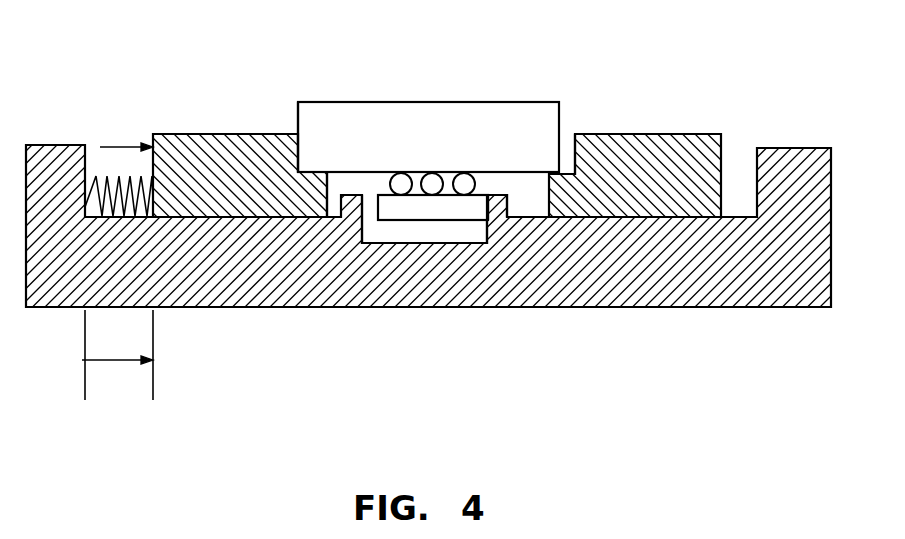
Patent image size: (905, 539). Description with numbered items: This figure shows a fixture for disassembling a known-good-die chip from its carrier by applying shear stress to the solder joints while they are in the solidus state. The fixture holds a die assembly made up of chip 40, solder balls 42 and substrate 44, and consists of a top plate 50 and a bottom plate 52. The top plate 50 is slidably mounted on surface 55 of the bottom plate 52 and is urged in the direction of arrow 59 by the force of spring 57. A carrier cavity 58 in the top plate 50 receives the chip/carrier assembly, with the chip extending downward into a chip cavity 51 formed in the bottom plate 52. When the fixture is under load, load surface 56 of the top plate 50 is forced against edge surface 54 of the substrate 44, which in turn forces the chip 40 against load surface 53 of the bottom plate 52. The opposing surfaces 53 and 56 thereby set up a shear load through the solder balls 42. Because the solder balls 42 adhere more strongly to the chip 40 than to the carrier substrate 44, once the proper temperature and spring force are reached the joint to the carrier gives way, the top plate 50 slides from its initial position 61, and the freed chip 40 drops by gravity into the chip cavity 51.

The chip 40 is at (395, 207).
The solder balls 42 is at (466, 181).
The substrate 44 is at (517, 108).
The top plate 50 is at (192, 141).
The chip cavity 51 is at (380, 233).
The bottom plate 52 is at (682, 303).
The load surface 53 is at (478, 233).
The edge surface 54 is at (300, 118).
The surface 55 is at (515, 219).
The load surface 56 is at (298, 158).
The spring 57 is at (85, 207).
The carrier cavity 58 is at (567, 143).
The arrow 59 is at (110, 153).
The position 61 is at (116, 359).